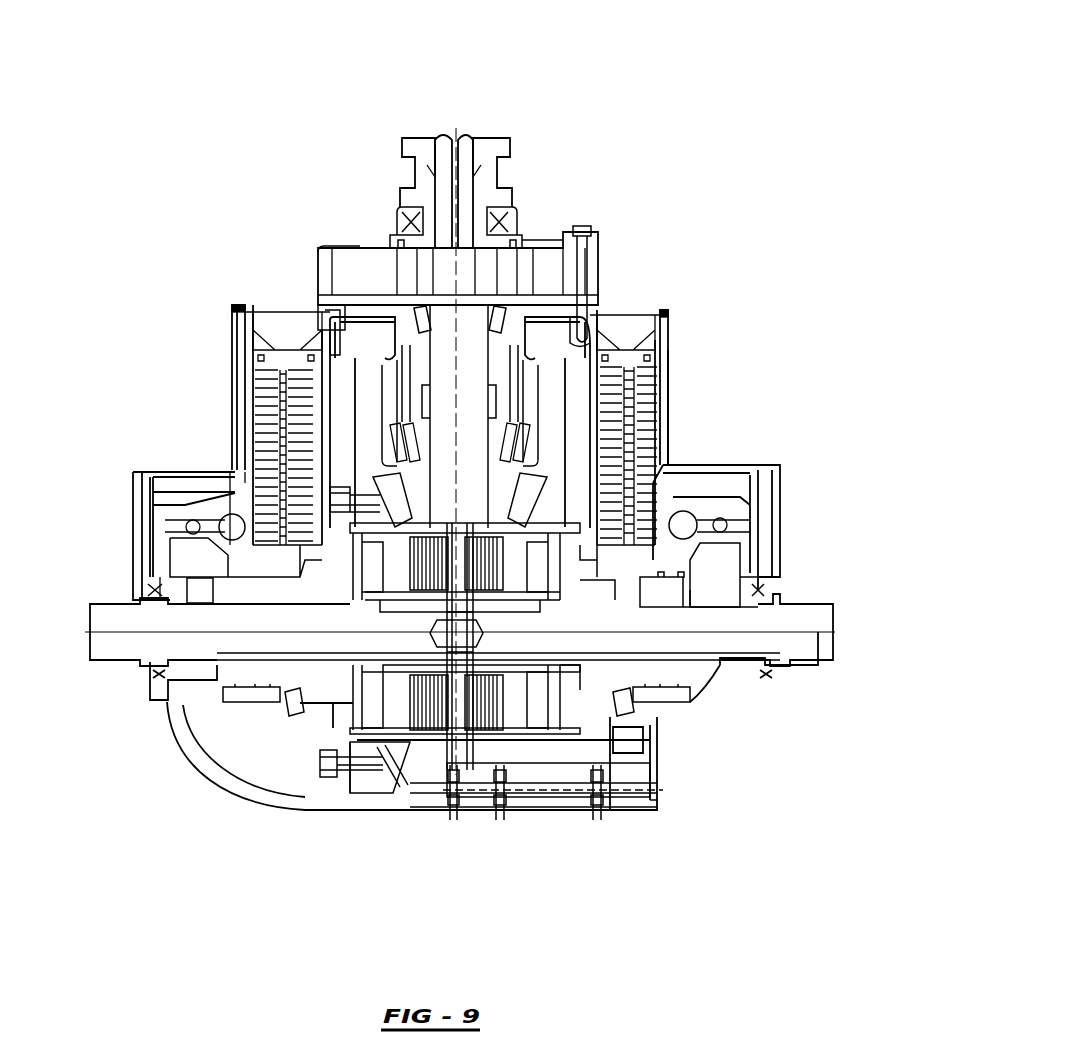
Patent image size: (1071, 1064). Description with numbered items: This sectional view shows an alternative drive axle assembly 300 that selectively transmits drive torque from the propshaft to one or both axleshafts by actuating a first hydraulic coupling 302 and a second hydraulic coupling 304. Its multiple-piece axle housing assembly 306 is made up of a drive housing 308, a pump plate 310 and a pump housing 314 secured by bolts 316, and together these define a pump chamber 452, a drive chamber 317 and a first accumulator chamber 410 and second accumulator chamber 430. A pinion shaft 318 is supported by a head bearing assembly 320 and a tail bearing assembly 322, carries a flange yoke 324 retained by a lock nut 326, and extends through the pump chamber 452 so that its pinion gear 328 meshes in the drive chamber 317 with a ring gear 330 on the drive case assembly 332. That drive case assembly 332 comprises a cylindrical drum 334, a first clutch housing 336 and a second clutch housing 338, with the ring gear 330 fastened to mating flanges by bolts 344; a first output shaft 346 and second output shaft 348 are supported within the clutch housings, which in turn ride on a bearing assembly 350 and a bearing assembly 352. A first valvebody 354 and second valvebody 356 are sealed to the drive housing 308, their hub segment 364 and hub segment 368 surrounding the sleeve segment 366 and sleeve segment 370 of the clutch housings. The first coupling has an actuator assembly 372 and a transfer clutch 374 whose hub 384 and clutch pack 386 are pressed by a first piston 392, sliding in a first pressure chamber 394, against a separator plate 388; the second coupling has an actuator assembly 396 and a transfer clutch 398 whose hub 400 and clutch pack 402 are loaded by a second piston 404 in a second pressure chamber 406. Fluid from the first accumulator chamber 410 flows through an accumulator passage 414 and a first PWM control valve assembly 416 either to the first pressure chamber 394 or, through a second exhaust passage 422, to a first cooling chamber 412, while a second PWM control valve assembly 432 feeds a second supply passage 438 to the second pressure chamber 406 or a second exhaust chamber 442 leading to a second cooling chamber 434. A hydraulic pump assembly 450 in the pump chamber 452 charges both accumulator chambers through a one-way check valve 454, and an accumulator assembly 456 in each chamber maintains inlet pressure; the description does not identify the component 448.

The drive axle assembly 300 is at (718, 80).
The first hydraulic coupling 302 is at (385, 570).
The second hydraulic coupling 304 is at (520, 500).
The axle housing assembly 306 is at (732, 319).
The drive housing 308 is at (702, 466).
The pump plate 310 is at (560, 298).
The pump housing 314 is at (335, 248).
The bolts 316 is at (586, 226).
The drive chamber 317 is at (570, 745).
The pinion shaft 318 is at (462, 362).
The head bearing assembly 320 is at (513, 437).
The tail bearing assembly 322 is at (417, 322).
The flange yoke 324 is at (508, 146).
The lock nut 326 is at (478, 137).
The pinion gear 328 is at (510, 487).
The ring gear 330 is at (364, 485).
The drive case assembly 332 is at (316, 748).
The cylindrical drum 334 is at (432, 735).
The first clutch housing 336 is at (233, 672).
The second clutch housing 338 is at (690, 672).
The bolts 344 is at (357, 770).
The first output shaft 346 is at (117, 615).
The second output shaft 348 is at (795, 612).
The bearing assembly 350 is at (298, 565).
The bearing assembly 352 is at (636, 712).
The first valvebody 354 is at (215, 520).
The second valvebody 356 is at (707, 512).
The hub segment 364 is at (335, 710).
The sleeve segment 366 is at (252, 600).
The hub segment 368 is at (625, 700).
The sleeve segment 370 is at (650, 600).
The actuator assembly 372 is at (258, 703).
The transfer clutch 374 is at (404, 725).
The hub 384 is at (412, 600).
The clutch pack 386 is at (427, 534).
The separator plate 388 is at (462, 597).
The first piston 392 is at (403, 710).
The first pressure chamber 394 is at (358, 688).
The actuator assembly 396 is at (575, 718).
The transfer clutch 398 is at (520, 720).
The hub 400 is at (490, 667).
The clutch pack 402 is at (478, 735).
The second piston 404 is at (544, 581).
The second pressure chamber 406 is at (553, 690).
The first accumulator chamber 410 is at (268, 332).
The first cooling chamber 412 is at (232, 540).
The accumulator passage 414 is at (175, 485).
The first PWM control valve assembly 416 is at (380, 670).
The second exhaust passage 422 is at (233, 592).
The second accumulator chamber 430 is at (648, 330).
The second PWM control valve assembly 432 is at (683, 523).
The second cooling chamber 434 is at (532, 672).
The second supply passage 438 is at (592, 578).
The second exhaust chamber 442 is at (677, 593).
The clutch frame 448 is at (390, 566).
The hydraulic pump assembly 450 is at (540, 243).
The pump chamber 452 is at (370, 255).
The one-way check valve 454 is at (326, 352).
The accumulator assembly 456 is at (252, 387).